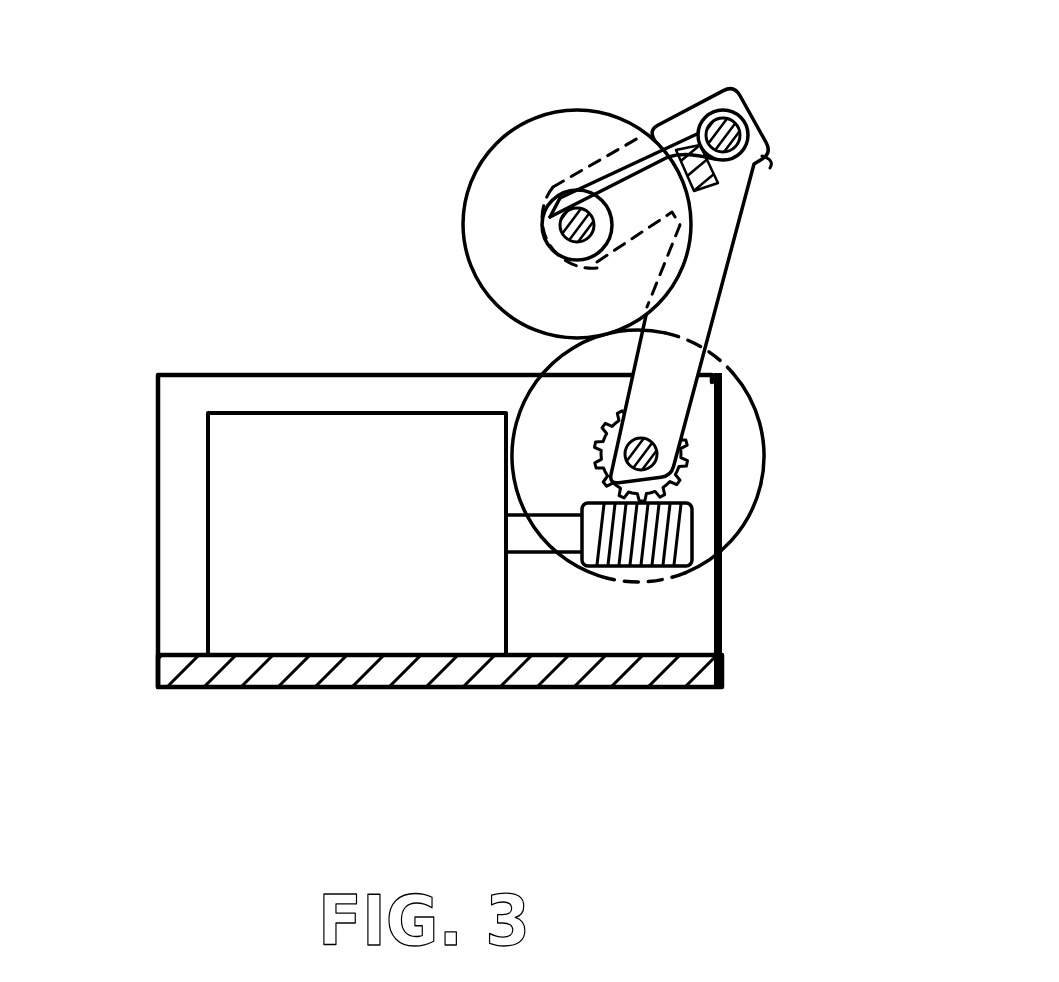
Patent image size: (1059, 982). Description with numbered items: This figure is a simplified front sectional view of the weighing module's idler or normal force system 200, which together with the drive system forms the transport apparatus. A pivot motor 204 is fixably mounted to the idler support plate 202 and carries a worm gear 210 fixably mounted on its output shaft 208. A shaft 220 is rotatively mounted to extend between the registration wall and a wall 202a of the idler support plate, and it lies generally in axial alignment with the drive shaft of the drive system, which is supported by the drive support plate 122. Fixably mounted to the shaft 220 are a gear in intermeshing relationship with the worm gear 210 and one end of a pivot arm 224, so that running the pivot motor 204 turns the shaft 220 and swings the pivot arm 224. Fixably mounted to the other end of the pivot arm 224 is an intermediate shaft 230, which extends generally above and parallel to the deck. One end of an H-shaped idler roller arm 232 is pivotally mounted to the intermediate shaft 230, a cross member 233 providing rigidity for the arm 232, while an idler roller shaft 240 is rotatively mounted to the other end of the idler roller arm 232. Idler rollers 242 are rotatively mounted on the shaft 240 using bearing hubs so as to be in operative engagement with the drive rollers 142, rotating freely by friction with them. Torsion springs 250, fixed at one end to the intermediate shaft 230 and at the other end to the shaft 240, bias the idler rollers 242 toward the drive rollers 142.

The idler or normal force system 200 is at (313, 134).
The idler support plate 202 is at (555, 688).
The wall of the idler support plate 202a is at (722, 627).
The pivot motor 204 is at (225, 553).
The output shaft 208 is at (535, 556).
The worm gear 210 is at (695, 541).
The shaft 220 is at (598, 463).
The drive support plate 122 is at (688, 460).
The drive rollers 142 is at (757, 407).
The pivot arm 224 is at (731, 250).
The intermediate shaft 230 is at (773, 163).
The H-shaped idler roller arm 232 is at (683, 107).
The cross member 233 is at (727, 193).
The idler roller shaft 240 is at (552, 250).
The idler rollers 242 is at (470, 180).
The torsion springs 250 is at (612, 170).